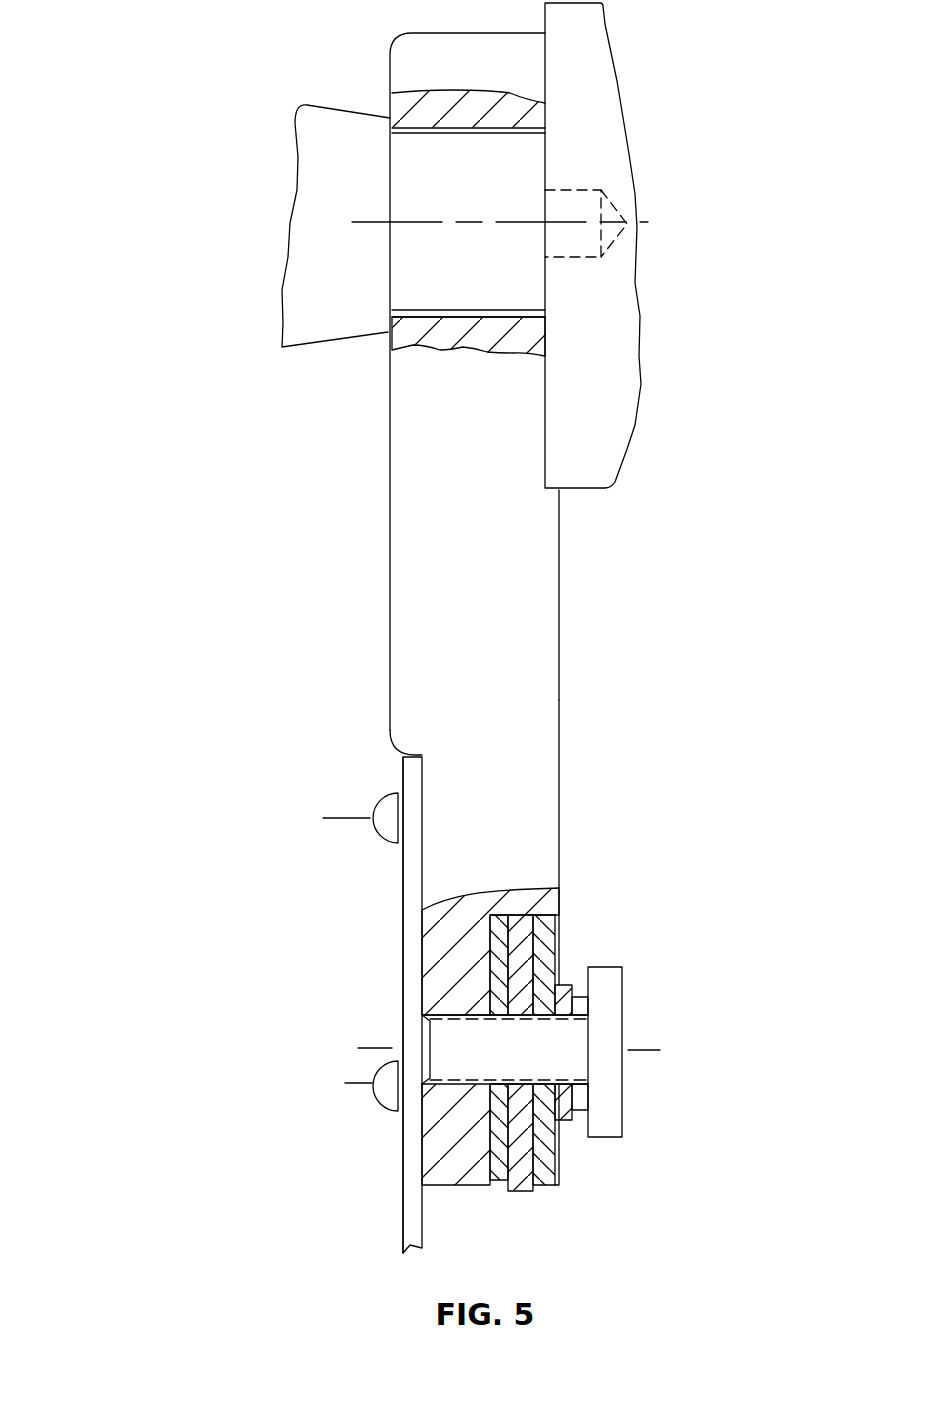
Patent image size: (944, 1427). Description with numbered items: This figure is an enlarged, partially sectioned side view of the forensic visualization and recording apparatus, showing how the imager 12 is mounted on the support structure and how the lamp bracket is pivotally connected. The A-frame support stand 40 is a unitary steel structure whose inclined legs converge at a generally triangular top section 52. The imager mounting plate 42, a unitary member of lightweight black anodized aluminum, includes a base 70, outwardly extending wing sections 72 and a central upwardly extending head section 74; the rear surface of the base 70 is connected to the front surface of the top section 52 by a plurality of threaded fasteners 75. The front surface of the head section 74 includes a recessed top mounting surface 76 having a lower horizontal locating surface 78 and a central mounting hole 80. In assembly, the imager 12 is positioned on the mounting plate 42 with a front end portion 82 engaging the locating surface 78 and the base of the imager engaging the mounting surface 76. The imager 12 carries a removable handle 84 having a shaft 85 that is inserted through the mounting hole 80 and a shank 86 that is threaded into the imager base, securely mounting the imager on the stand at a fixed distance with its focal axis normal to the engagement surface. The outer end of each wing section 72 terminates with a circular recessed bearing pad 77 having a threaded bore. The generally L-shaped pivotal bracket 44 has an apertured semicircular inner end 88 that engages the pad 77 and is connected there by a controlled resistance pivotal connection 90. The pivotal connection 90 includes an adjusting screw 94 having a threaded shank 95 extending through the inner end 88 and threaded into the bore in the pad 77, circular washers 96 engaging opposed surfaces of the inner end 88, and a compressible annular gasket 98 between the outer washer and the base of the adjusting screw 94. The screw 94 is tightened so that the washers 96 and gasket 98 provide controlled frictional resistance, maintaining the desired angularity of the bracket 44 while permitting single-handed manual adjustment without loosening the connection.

The imager 12 is at (641, 283).
The A-frame support stand 40 is at (403, 968).
The imager mounting plate 42 is at (390, 623).
The pivotal bracket 44 is at (525, 1192).
The top section 52 is at (407, 897).
The base 70 is at (545, 833).
The wing section 72 is at (458, 1130).
The head section 74 is at (543, 562).
The threaded fastener 75 is at (387, 807).
The mounting surface 76 is at (538, 388).
The bearing pad 77 is at (485, 988).
The locating surface 78 is at (556, 490).
The mounting hole 80 is at (530, 106).
The front end portion 82 is at (554, 482).
The removable handle 84 is at (342, 158).
The shaft 85 is at (425, 264).
The shank 86 is at (557, 215).
The inner end 88 is at (523, 1153).
The pivotal connection 90 is at (646, 997).
The adjusting screw 94 is at (610, 1060).
The threaded shank 95 is at (470, 1053).
The washer 96 is at (545, 1127).
The gasket 98 is at (572, 983).